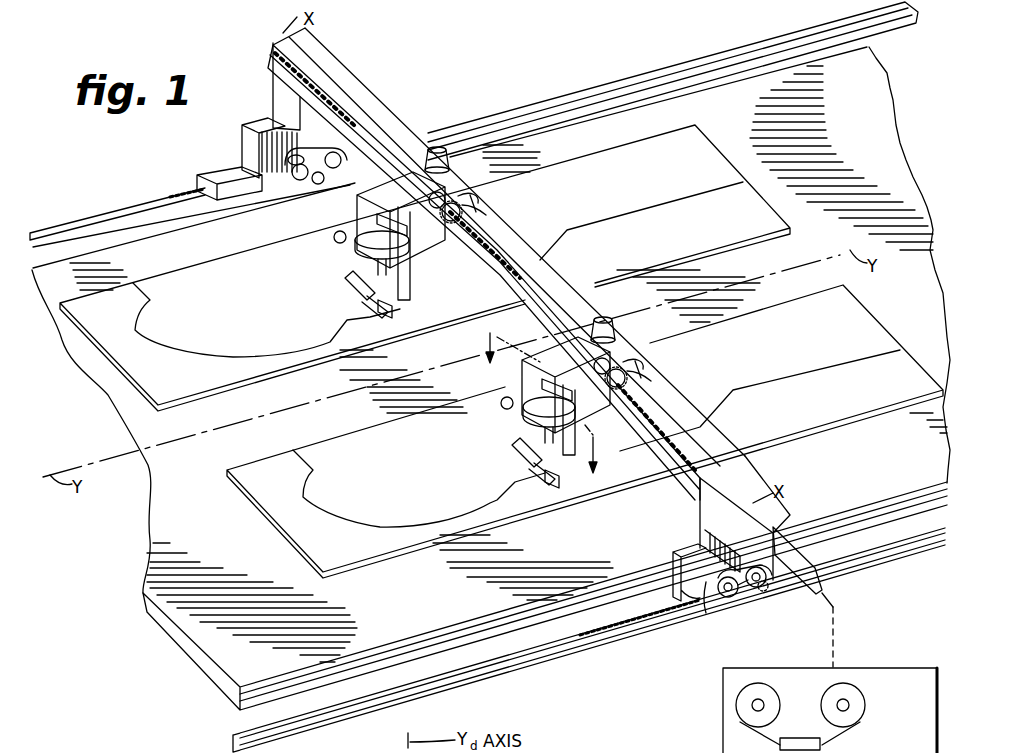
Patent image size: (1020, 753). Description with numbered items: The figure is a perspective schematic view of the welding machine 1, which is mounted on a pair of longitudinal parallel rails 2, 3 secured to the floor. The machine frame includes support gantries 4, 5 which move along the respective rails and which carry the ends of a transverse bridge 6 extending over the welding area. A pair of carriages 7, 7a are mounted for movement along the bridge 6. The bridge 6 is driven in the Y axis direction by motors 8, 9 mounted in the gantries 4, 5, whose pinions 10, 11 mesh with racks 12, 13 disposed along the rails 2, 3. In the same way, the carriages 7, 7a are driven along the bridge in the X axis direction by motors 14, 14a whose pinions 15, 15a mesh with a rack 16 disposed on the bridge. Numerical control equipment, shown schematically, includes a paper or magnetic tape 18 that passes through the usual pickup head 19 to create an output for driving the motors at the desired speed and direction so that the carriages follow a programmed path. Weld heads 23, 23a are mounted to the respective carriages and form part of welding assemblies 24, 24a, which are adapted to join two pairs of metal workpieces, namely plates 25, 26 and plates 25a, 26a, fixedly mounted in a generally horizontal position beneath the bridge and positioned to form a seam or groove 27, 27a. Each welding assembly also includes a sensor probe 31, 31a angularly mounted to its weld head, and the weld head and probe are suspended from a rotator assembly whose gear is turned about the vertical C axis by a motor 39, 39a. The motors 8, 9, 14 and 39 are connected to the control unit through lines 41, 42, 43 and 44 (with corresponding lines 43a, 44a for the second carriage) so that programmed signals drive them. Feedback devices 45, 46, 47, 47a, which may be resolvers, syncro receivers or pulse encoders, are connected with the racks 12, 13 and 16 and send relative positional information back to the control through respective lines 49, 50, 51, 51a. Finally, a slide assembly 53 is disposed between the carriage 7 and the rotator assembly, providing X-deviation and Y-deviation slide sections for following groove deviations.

The welding machine 1 is at (481, 66).
The rail 2 is at (587, 648).
The rail 3 is at (613, 82).
The support gantry 4 is at (747, 497).
The support gantry 5 is at (277, 102).
The bridge 6 is at (707, 440).
The carriage 7 is at (516, 393).
The carriage 7a is at (357, 203).
The motor 8 is at (723, 600).
The motor 9 is at (307, 182).
The pinion 10 is at (740, 597).
The pinion 11 is at (290, 158).
The rack 12 is at (847, 567).
The rack 13 is at (170, 198).
The motor 14 is at (606, 318).
The motor 14a is at (432, 148).
The pinion 15 is at (575, 358).
The pinion 15a is at (405, 150).
The rack 16 is at (497, 250).
The tape 18 is at (750, 738).
The pickup head 19 is at (827, 745).
The weld head 23 is at (560, 467).
The weld head 23a is at (392, 298).
The welding assembly 24 is at (457, 438).
The welding assembly 24a is at (302, 264).
The plate 25 is at (900, 388).
The plate 25a is at (760, 228).
The plate 26 is at (847, 335).
The plate 26a is at (697, 164).
The seam 27 is at (847, 360).
The seam 27a is at (717, 197).
The probe 31 is at (513, 457).
The probe 31a is at (345, 295).
The motor 39 is at (593, 423).
The motor 39a is at (410, 247).
The line 41 is at (710, 613).
The line 42 is at (222, 168).
The line 43 is at (618, 363).
The line 43a is at (463, 190).
The line 44 is at (527, 415).
The line 44a is at (352, 242).
The feedback device 45 is at (764, 592).
The feedback device 46 is at (260, 120).
The feedback device 47 is at (637, 388).
The feedback device 47a is at (473, 213).
The line 49 is at (773, 530).
The line 50 is at (337, 153).
The line 51 is at (640, 367).
The line 51a is at (493, 194).
The slide assembly 53 is at (500, 417).